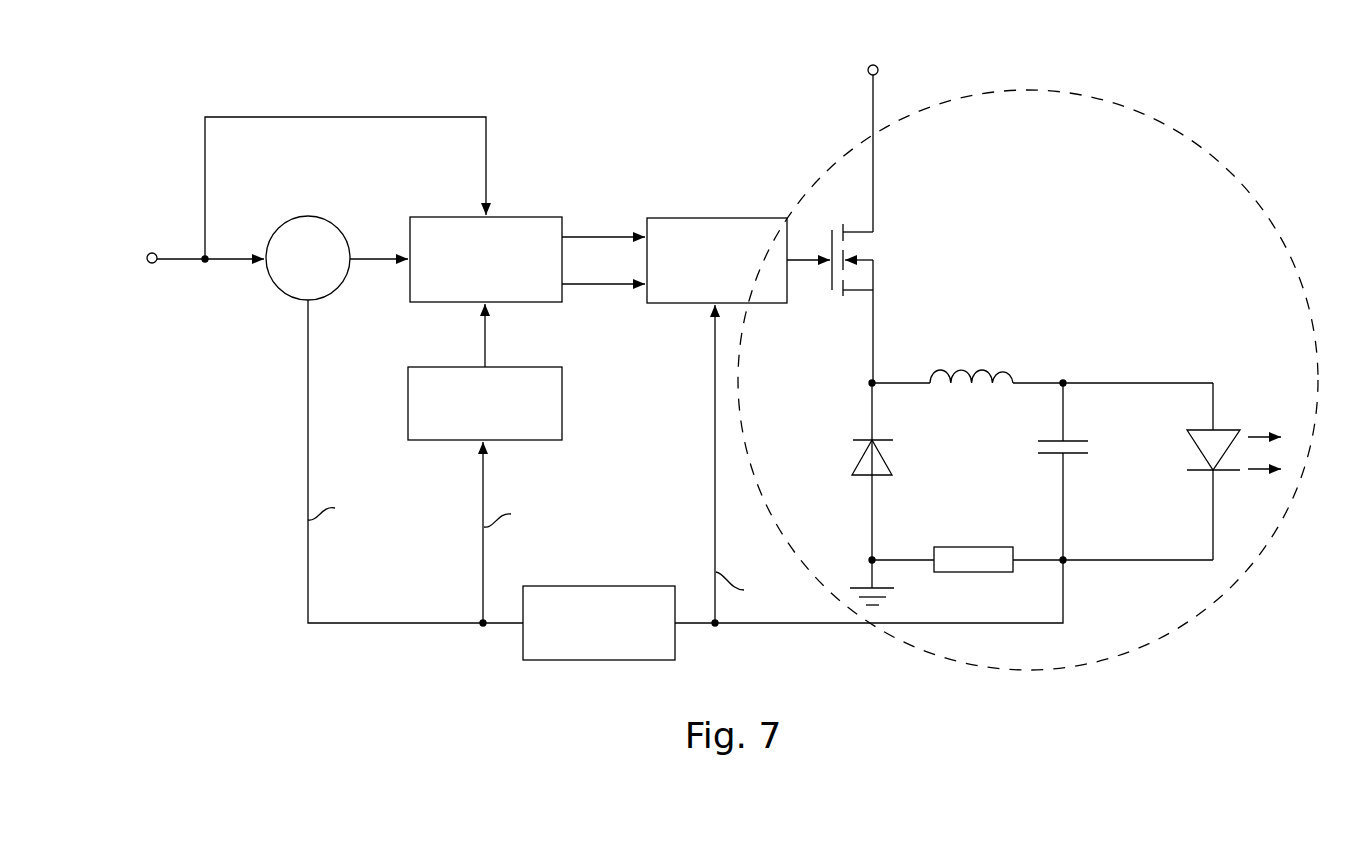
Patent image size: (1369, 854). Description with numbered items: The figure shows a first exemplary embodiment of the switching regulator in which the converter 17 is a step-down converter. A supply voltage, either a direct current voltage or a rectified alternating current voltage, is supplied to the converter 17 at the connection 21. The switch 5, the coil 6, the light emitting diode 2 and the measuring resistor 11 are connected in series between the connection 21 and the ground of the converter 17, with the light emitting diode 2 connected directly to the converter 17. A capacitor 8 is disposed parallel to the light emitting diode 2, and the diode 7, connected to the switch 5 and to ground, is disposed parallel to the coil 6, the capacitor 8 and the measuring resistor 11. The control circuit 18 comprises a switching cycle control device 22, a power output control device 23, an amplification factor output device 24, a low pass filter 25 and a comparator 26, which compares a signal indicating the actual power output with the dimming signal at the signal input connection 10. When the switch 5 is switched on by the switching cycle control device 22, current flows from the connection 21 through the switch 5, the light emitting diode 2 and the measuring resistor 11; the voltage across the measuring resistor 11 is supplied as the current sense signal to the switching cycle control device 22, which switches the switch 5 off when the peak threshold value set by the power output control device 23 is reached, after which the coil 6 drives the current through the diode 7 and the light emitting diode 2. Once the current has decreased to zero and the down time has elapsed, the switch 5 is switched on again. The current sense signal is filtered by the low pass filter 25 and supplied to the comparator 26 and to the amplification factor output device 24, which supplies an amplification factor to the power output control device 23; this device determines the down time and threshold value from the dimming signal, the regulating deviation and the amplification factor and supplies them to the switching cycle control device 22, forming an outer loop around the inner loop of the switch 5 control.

The light emitting diode 2 is at (1228, 430).
The switch 5 is at (876, 268).
The coil 6 is at (985, 368).
The diode 7 is at (893, 463).
The capacitor 8 is at (1090, 440).
The signal input connection 10 is at (155, 266).
The measuring resistor 11 is at (977, 546).
The converter 17 is at (1290, 262).
The control circuit 18 is at (378, 645).
The connection 21 is at (879, 67).
The switching cycle control device 22 is at (715, 217).
The power output control device 23 is at (533, 216).
The amplification factor output device 24 is at (563, 405).
The low pass filter 25 is at (618, 585).
The comparator 26 is at (338, 226).